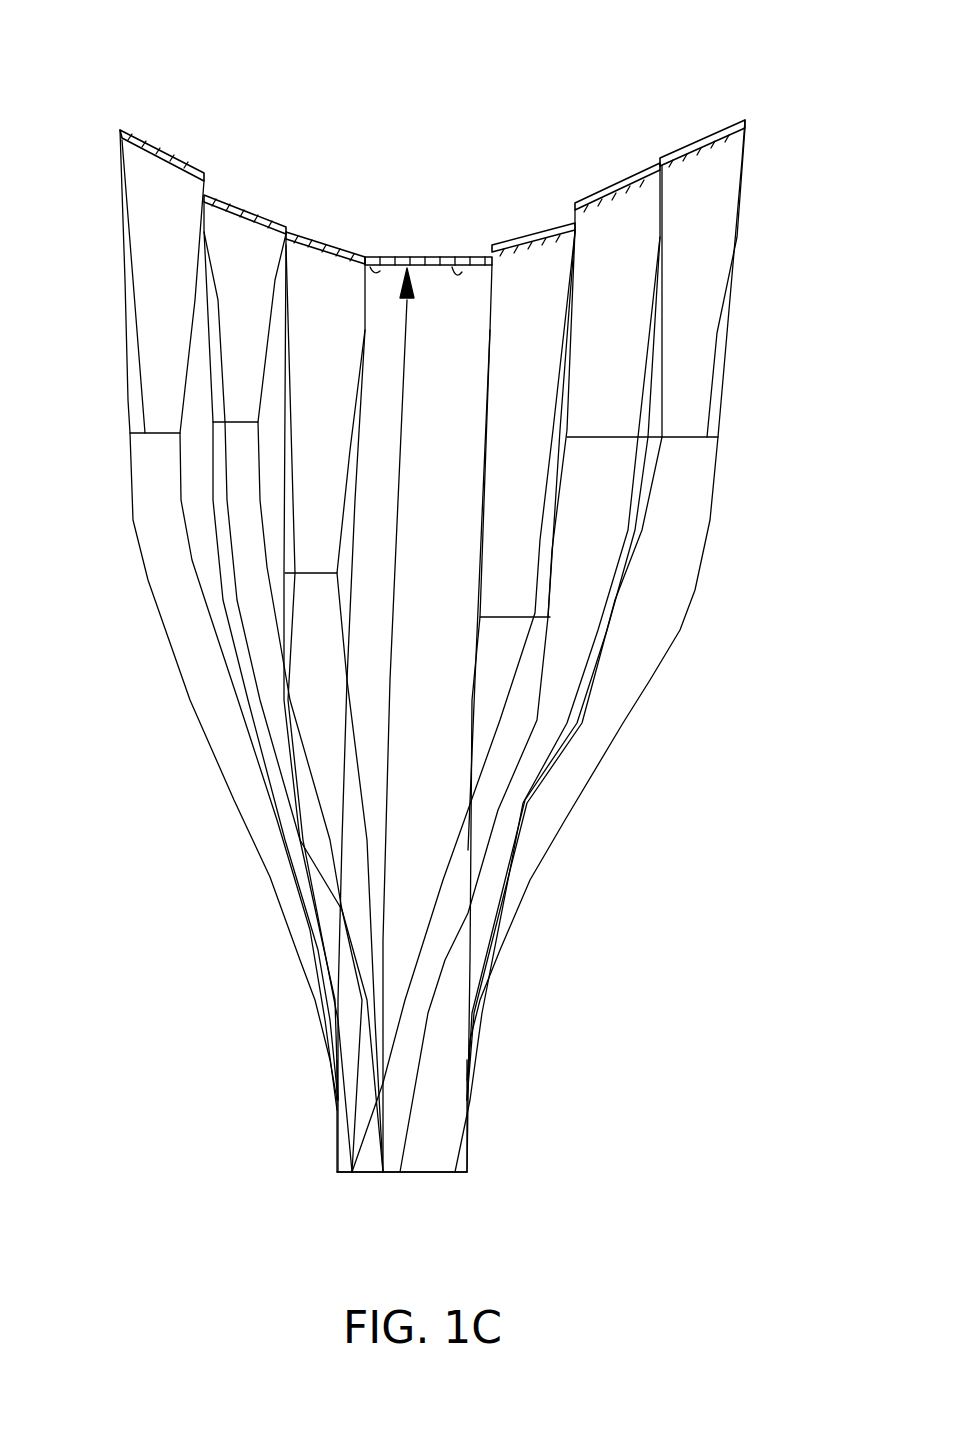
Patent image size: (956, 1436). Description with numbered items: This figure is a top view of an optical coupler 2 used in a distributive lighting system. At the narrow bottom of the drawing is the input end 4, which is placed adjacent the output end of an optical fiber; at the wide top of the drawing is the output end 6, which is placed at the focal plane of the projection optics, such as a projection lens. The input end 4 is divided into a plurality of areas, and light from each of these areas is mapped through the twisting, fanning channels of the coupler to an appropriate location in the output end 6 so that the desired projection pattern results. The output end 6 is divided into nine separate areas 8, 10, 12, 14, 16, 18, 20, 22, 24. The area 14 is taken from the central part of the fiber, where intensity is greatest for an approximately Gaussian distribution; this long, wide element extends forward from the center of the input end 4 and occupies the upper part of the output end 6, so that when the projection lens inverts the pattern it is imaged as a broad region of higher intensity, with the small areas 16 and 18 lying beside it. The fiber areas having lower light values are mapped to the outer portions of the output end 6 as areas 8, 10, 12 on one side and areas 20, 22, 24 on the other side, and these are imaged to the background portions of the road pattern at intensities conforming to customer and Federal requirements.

The optical coupler 2 is at (703, 632).
The input end 4 is at (427, 1173).
The output end 6 is at (519, 106).
The area 8 is at (162, 185).
The area 10 is at (235, 208).
The area 12 is at (318, 242).
The area 14 is at (427, 257).
The area 16 is at (380, 270).
The area 18 is at (460, 277).
The area 20 is at (522, 233).
The area 22 is at (600, 183).
The area 24 is at (688, 145).